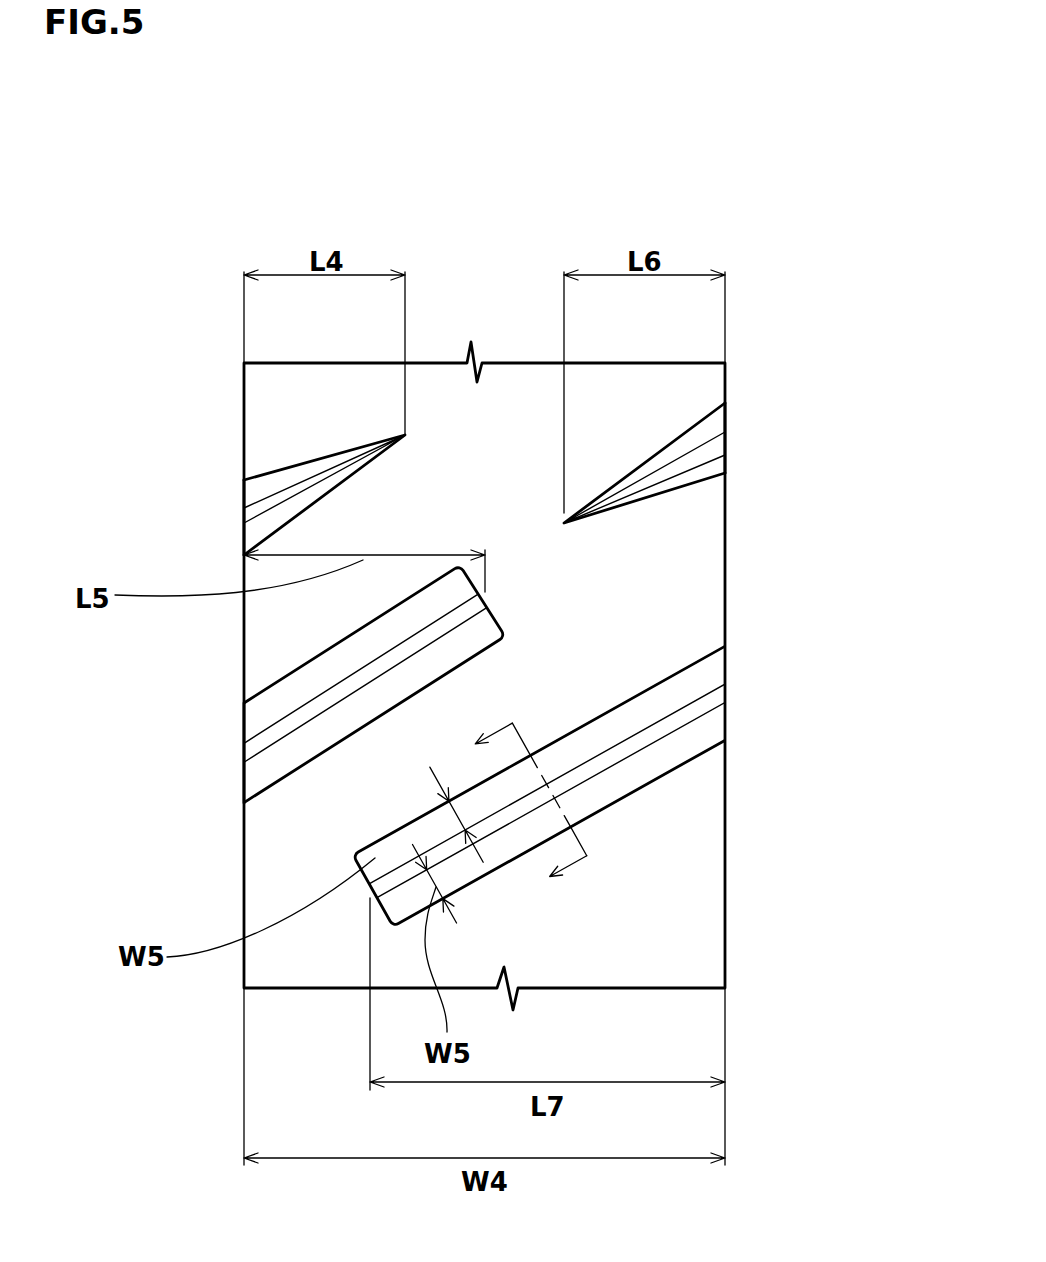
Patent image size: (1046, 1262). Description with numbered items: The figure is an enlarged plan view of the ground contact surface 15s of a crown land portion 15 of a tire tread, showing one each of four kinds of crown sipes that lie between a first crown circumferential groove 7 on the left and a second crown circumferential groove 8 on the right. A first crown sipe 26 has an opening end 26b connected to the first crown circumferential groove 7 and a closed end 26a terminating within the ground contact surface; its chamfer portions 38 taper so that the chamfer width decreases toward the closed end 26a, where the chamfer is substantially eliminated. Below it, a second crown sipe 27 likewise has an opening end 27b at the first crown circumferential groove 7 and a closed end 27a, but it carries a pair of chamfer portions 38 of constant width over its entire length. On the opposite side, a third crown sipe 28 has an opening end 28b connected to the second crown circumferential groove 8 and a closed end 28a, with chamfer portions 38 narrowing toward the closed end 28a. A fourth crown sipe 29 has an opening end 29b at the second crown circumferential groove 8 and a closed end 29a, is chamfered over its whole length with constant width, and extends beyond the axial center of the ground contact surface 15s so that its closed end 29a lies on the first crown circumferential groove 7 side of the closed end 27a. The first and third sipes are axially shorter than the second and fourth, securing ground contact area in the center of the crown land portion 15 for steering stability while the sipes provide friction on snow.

The crown land portion 15 is at (503, 413).
The ground contact surface 15s is at (650, 927).
The first crown sipe 26 is at (310, 480).
The closed end of first crown sipe 26a is at (405, 435).
The opening end of first crown sipe 26b is at (246, 522).
The second crown sipe 27 is at (320, 703).
The closed end of second crown sipe 27a is at (500, 595).
The opening end of second crown sipe 27b is at (245, 755).
The third crown sipe 28 is at (652, 477).
The closed end of third crown sipe 28a is at (566, 522).
The opening end of third crown sipe 28b is at (726, 440).
The fourth crown sipe 29 is at (635, 743).
The closed end of fourth crown sipe 29a is at (372, 892).
The opening end of fourth crown sipe 29b is at (725, 695).
The chamfer portion 38 is at (262, 487).
The first crown circumferential groove 7 is at (169, 919).
The second crown circumferential groove 8 is at (800, 879).